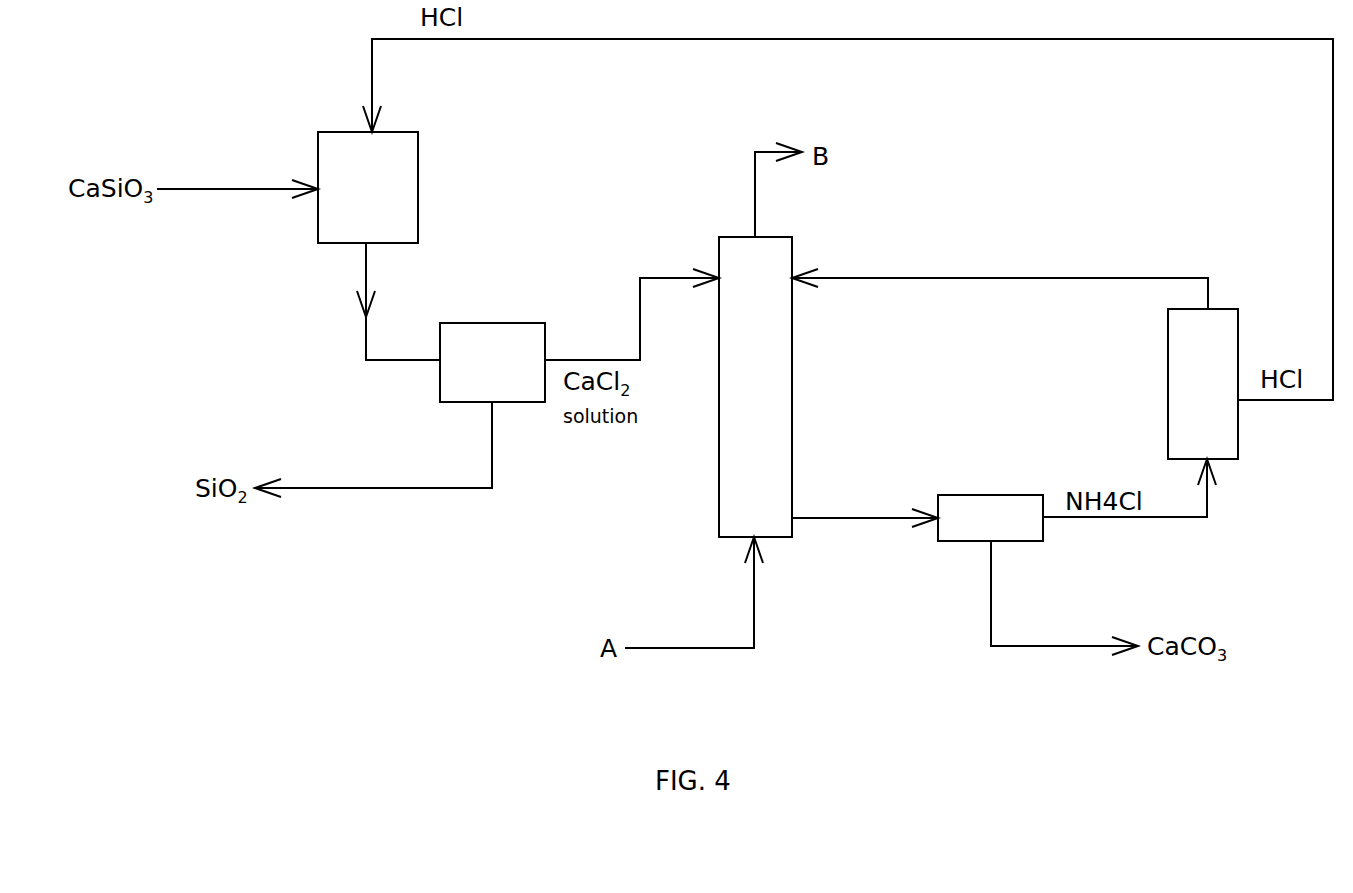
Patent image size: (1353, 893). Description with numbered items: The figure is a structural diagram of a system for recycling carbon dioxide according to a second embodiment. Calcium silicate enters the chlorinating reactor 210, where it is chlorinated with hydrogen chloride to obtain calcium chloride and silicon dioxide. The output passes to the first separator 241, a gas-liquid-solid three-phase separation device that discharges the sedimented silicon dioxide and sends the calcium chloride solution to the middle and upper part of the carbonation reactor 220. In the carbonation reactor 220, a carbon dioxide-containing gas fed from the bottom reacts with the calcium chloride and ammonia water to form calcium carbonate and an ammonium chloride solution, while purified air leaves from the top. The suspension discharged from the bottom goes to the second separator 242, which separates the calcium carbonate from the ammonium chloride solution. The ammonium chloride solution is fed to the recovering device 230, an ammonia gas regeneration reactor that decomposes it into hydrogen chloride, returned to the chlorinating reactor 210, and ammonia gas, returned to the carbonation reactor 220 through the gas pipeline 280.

The chlorinating reactor 210 is at (349, 200).
The first separator 241 is at (474, 378).
The carbonation reactor 220 is at (736, 398).
The second separator 242 is at (971, 531).
The recovering device 230 is at (1184, 395).
The gas pipeline 280 is at (1035, 278).